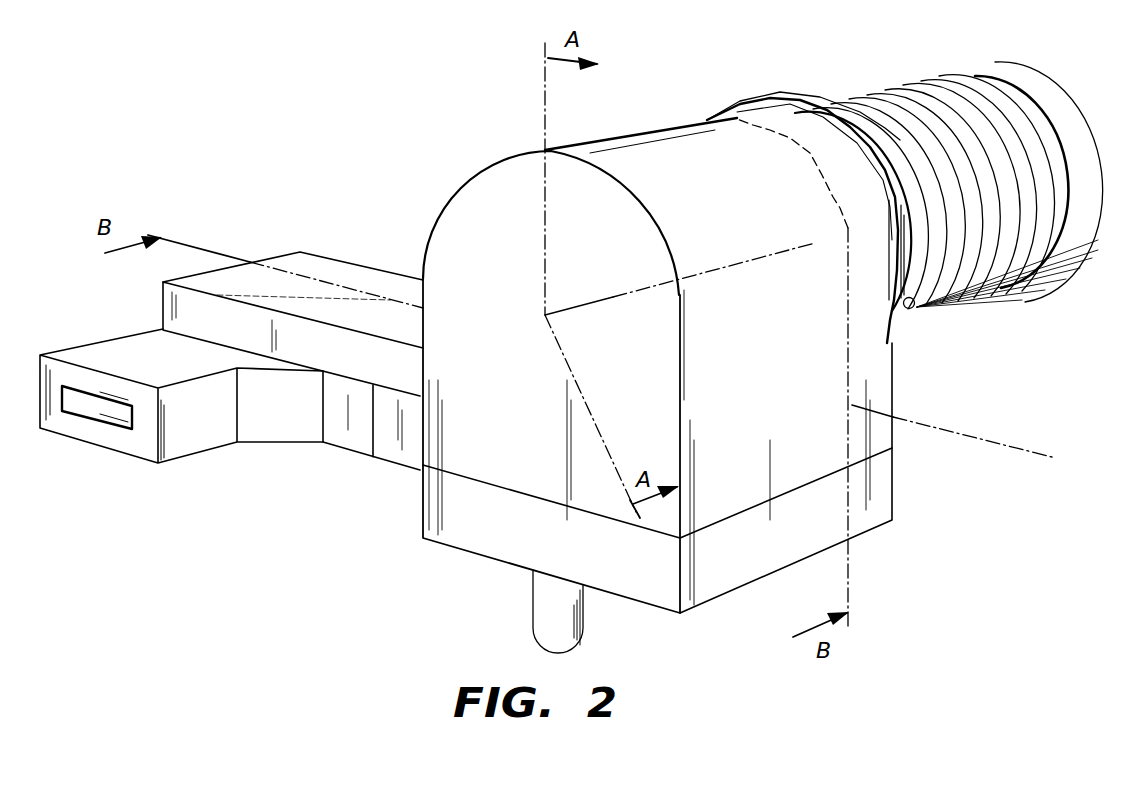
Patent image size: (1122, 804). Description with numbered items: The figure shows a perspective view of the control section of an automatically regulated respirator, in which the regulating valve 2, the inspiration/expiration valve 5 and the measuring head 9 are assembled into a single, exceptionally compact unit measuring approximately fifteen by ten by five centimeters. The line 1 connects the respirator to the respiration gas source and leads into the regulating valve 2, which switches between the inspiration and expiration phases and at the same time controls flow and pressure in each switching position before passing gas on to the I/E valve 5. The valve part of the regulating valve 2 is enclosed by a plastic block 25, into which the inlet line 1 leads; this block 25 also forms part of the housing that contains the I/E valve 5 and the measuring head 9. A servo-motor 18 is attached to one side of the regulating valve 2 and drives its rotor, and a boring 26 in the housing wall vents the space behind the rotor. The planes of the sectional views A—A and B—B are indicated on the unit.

The line 1 is at (550, 625).
The regulating valve 2 is at (468, 202).
The inspiration/expiration valve 5 is at (392, 440).
The measuring head 9 is at (255, 418).
The servo-motor 18 is at (953, 303).
The plastic block 25 is at (668, 133).
The boring 26 is at (912, 309).